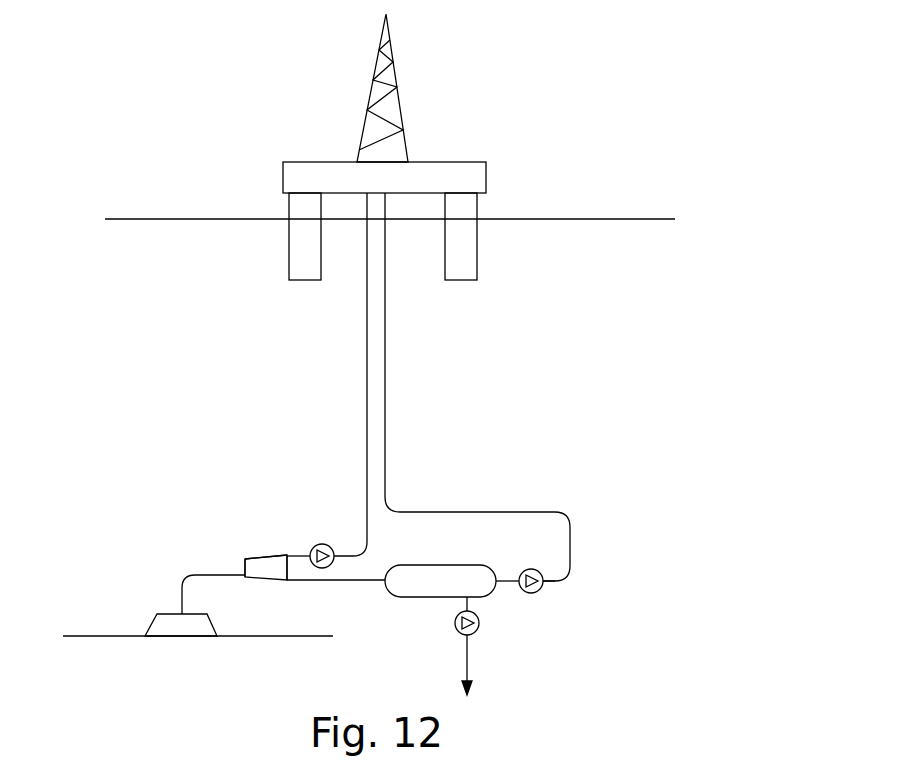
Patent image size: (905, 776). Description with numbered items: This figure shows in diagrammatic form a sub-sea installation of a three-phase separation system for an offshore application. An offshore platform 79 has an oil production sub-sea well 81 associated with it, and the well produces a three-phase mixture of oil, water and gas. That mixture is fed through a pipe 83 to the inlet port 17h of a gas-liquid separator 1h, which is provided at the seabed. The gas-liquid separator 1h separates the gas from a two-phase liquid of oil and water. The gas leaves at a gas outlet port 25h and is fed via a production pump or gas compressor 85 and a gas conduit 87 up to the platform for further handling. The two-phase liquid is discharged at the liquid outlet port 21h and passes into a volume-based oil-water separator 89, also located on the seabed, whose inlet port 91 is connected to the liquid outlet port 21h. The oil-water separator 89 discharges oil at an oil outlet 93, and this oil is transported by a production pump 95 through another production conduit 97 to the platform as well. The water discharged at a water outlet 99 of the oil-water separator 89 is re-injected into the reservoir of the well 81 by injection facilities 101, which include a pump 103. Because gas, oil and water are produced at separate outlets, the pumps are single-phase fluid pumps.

The offshore platform 79 is at (443, 101).
The gas conduit 87 is at (367, 375).
The production conduit 97 is at (385, 408).
The production pump or gas compressor 85 is at (318, 548).
The pipe 83 is at (188, 570).
The oil production sub-sea well 81 is at (153, 628).
The gas-liquid separator 1h is at (257, 565).
The gas outlet port 25h is at (287, 558).
The inlet port 17h is at (242, 577).
The liquid outlet port 21h is at (287, 580).
The inlet port 91 is at (383, 583).
The oil-water separator 89 is at (437, 565).
The oil outlet 93 is at (497, 580).
The production pump 95 is at (538, 593).
The water outlet 99 is at (467, 602).
The pump 103 is at (480, 630).
The injection facilities 101 is at (484, 665).